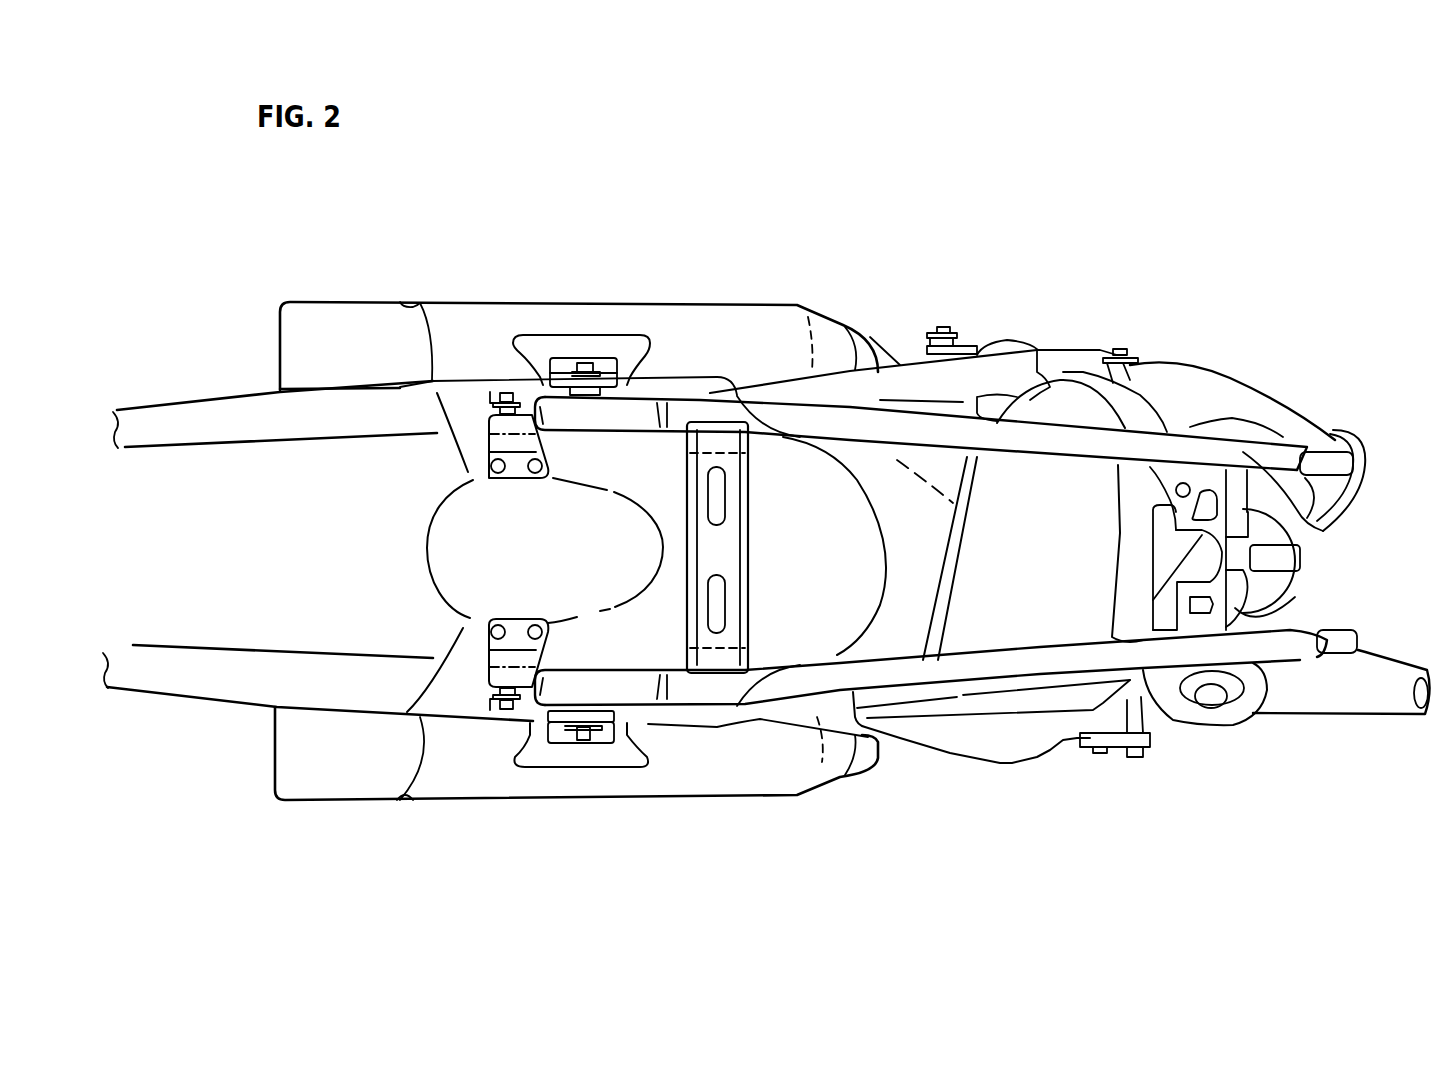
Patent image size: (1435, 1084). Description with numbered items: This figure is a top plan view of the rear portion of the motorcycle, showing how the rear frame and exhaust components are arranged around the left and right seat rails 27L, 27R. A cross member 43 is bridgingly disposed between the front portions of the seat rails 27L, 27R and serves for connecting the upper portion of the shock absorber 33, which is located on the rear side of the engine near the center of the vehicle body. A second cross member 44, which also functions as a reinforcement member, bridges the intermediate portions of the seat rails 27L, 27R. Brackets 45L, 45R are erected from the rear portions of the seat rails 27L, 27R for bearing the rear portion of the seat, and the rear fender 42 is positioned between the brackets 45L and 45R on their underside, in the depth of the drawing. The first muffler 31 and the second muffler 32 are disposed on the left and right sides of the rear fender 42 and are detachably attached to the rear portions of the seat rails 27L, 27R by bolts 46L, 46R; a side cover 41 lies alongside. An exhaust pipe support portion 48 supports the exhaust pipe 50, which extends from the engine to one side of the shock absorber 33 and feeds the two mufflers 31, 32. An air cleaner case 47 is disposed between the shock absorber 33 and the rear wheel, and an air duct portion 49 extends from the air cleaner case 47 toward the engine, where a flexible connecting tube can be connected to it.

The left seat rail 27L is at (888, 432).
The right seat rail 27R is at (838, 680).
The first muffler 31 is at (478, 787).
The second muffler 32 is at (470, 330).
The shock absorber 33 is at (1273, 593).
The side cover 41 is at (983, 735).
The rear fender 42 is at (222, 510).
The cross member 43 is at (1190, 485).
The cross member 44 is at (705, 455).
The left bracket 45L is at (474, 478).
The right bracket 45R is at (483, 653).
The left bolt 46L is at (583, 350).
The right bolt 46R is at (587, 740).
The air cleaner case 47 is at (1025, 545).
The exhaust pipe support portion 48 is at (1177, 712).
The air duct portion 49 is at (1255, 408).
The exhaust pipe 50 is at (1318, 700).